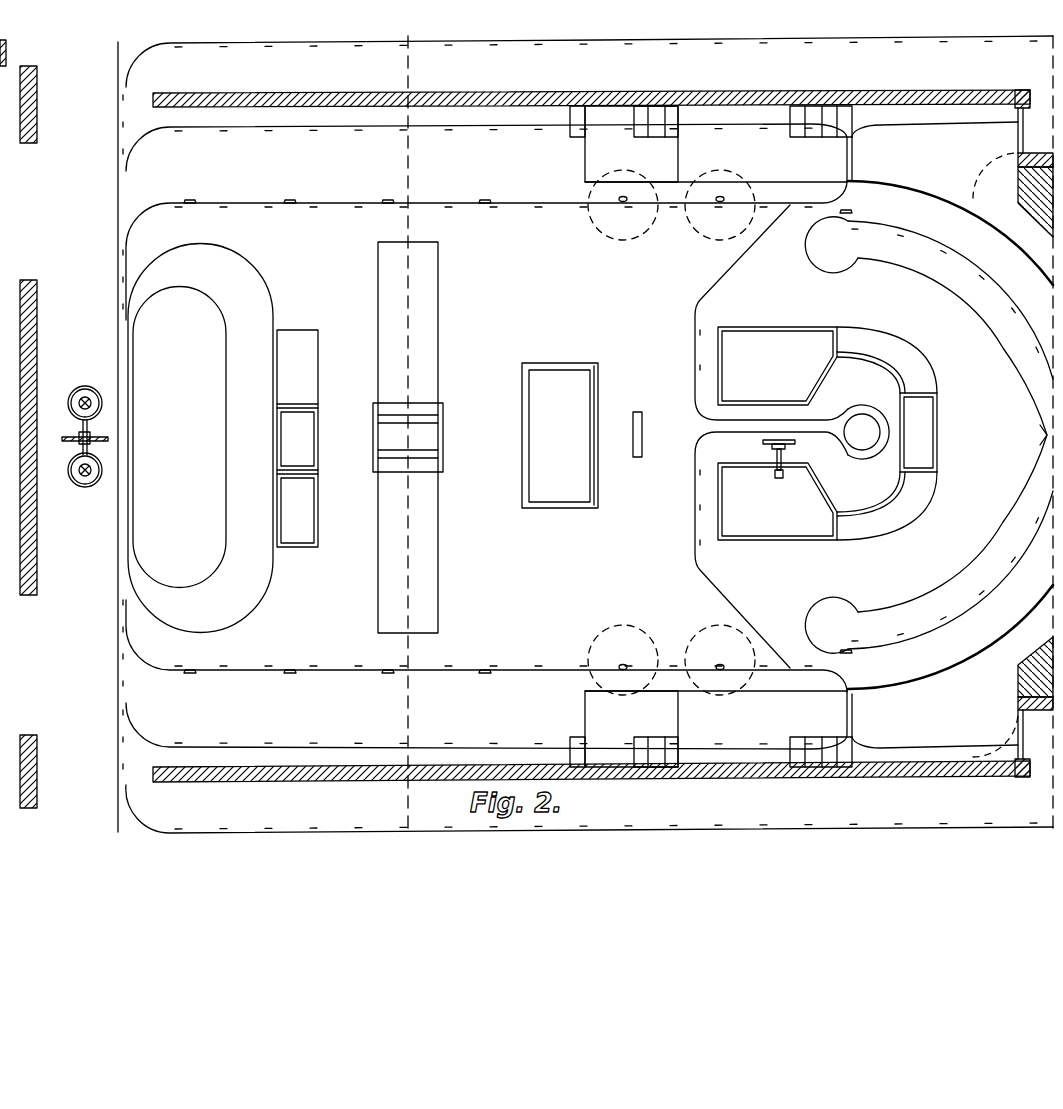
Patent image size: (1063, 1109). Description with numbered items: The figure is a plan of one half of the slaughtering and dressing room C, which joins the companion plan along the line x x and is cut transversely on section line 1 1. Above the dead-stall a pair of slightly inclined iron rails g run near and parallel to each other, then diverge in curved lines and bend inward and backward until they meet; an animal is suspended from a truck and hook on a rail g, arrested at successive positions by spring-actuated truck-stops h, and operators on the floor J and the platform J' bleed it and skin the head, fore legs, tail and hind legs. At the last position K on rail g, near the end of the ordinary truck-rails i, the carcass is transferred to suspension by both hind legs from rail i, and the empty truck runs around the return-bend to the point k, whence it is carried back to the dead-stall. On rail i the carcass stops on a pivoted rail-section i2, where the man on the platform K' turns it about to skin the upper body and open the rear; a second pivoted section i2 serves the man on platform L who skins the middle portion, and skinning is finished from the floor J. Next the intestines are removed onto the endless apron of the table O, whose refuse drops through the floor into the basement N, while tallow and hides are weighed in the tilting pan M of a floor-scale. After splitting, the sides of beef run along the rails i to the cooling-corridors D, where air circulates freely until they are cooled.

The section line 1 1 is at (405, 435).
The line x x is at (1046, 433).
The cooling-corridor D is at (526, 425).
The truck-rail i is at (576, 426).
The truck-stop h is at (609, 438).
The platform L is at (624, 436).
The platform K' is at (781, 436).
The pivoted rail-section i2 is at (671, 432).
The slaughtering and dressing room C is at (620, 436).
The last position on rail g K is at (831, 435).
The floor J is at (683, 399).
The platform J' is at (950, 435).
The inclined iron rail g is at (904, 436).
The point k is at (1031, 435).
The table O is at (360, 437).
The pan of floor-scale M is at (582, 435).
The basement N is at (78, 414).